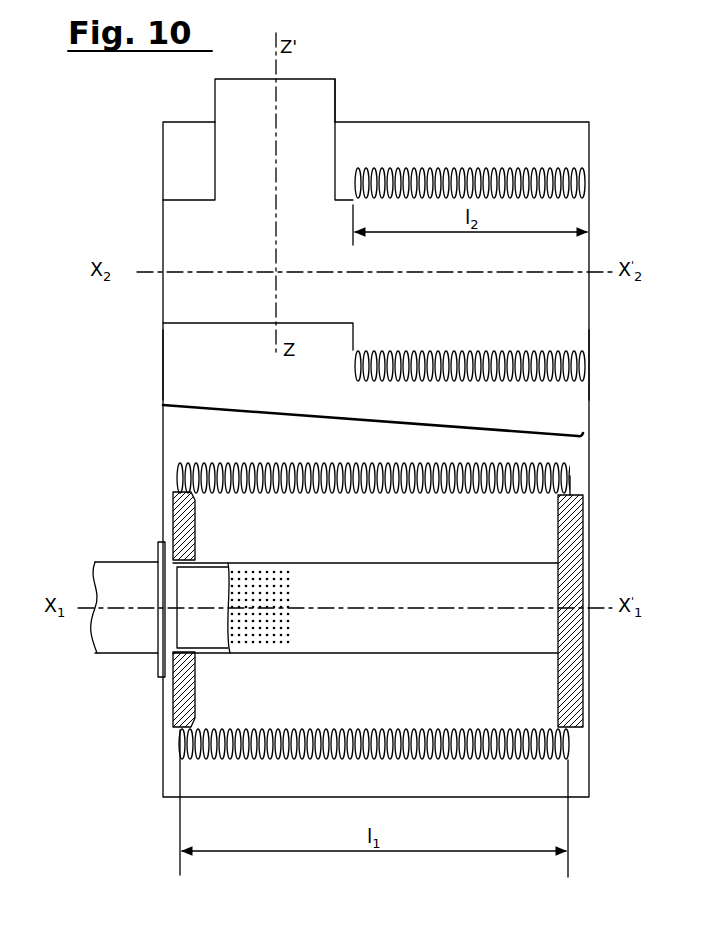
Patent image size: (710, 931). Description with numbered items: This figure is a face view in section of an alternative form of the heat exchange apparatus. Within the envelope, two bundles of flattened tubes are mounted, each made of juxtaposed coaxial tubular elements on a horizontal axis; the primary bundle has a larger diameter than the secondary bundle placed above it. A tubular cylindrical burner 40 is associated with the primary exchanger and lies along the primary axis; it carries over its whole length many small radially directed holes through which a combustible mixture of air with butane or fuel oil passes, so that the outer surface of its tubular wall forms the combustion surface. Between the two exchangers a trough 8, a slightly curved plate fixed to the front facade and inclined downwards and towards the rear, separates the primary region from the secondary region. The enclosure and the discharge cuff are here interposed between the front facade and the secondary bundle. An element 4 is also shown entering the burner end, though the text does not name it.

The shaft 4 is at (131, 568).
The trough 8 is at (492, 425).
The burner 40 is at (476, 634).